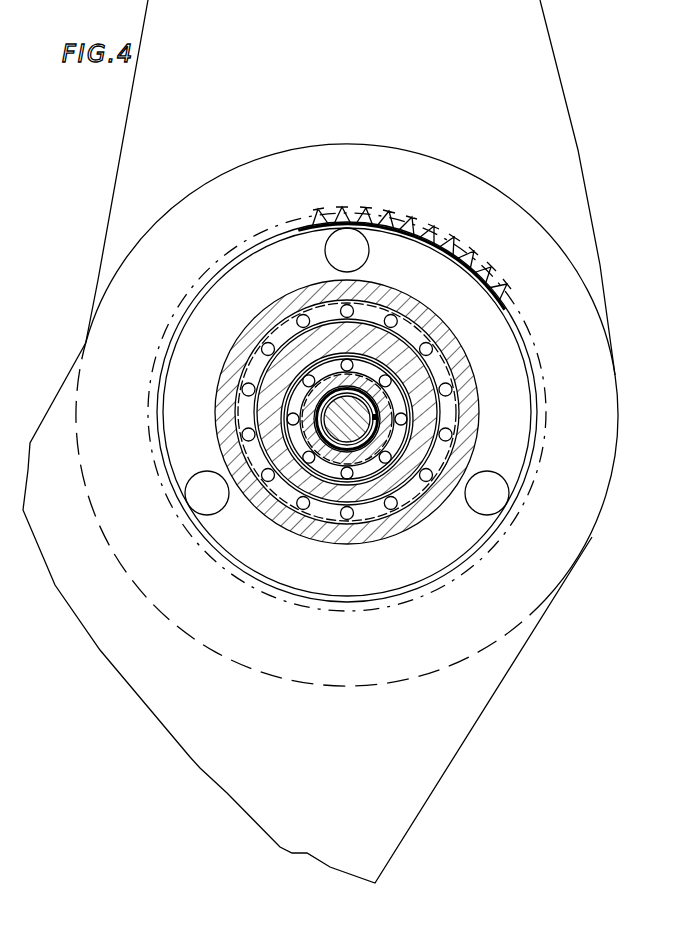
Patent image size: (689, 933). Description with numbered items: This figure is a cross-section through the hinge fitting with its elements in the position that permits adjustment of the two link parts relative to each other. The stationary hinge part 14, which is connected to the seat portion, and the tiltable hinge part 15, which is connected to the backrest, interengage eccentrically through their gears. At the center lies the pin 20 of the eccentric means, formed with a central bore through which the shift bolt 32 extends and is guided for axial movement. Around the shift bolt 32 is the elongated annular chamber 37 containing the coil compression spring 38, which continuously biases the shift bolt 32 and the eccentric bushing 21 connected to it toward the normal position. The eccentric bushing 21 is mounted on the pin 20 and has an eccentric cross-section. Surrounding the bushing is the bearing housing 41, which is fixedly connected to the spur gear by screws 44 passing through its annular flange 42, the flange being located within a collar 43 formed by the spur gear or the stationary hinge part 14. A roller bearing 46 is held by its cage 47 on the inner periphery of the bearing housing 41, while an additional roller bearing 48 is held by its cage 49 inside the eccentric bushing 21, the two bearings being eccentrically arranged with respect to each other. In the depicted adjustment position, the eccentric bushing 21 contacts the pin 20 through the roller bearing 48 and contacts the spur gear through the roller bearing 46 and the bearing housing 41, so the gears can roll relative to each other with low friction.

The stationary hinge part 14 is at (314, 784).
The tiltable hinge part 15 is at (368, 58).
The pin 20 is at (273, 298).
The eccentric bushing 21 is at (330, 333).
The shift bolt 32 is at (340, 412).
The annular chamber 37 is at (318, 421).
The coil compression spring 38 is at (297, 387).
The bearing housing 41 is at (467, 373).
The flange 42 is at (517, 398).
The collar 43 is at (485, 275).
The screws 44 is at (352, 250).
The roller bearing 46 is at (452, 432).
The cage 47 is at (458, 441).
The additional roller bearing 48 is at (346, 472).
The cage 49 is at (362, 485).